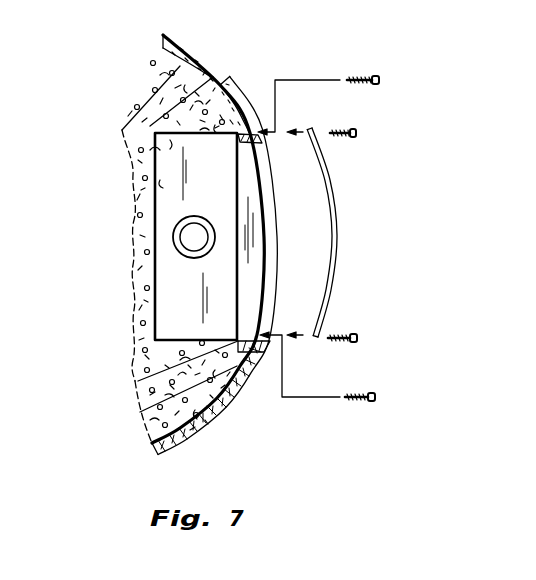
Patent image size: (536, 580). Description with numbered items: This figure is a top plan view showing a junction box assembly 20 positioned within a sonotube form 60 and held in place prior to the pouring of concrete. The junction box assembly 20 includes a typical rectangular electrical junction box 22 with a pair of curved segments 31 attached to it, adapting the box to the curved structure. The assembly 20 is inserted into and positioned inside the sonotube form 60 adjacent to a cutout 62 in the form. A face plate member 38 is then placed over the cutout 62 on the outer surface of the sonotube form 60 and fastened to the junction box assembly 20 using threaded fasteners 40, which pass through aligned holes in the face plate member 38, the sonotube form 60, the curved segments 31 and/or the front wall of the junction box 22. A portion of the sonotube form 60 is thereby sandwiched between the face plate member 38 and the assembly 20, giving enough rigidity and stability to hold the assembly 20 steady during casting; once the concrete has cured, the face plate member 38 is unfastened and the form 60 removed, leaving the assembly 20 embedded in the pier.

The junction box assembly 20 is at (132, 245).
The junction box 22 is at (155, 304).
The curved segments 31 is at (270, 237).
The face plate member 38 is at (338, 268).
The threaded fasteners 40 is at (355, 78).
The sonotube form 60 is at (227, 83).
The cutout 62 is at (262, 305).